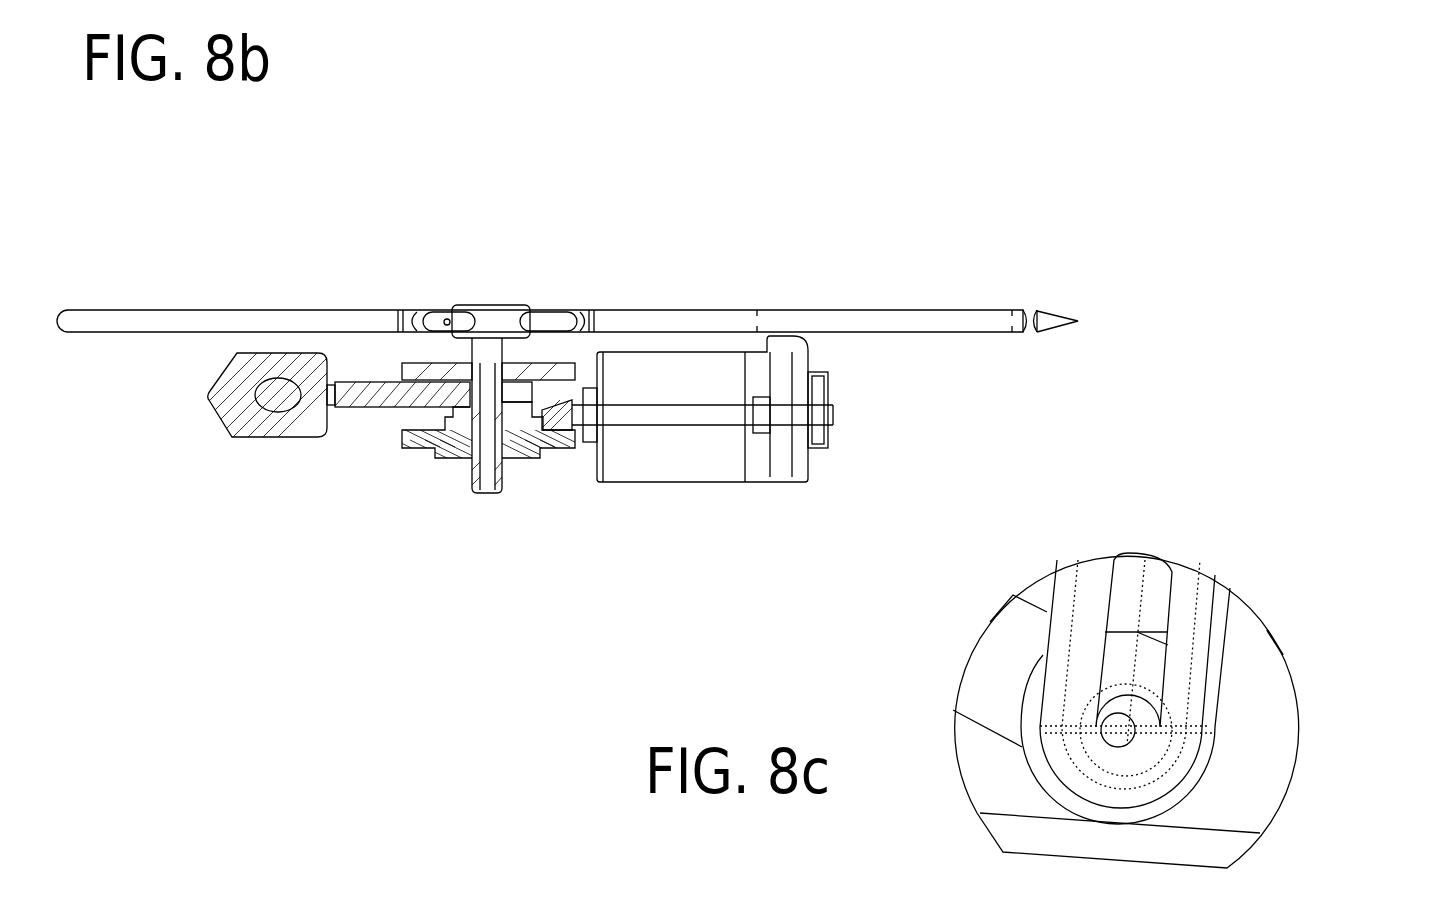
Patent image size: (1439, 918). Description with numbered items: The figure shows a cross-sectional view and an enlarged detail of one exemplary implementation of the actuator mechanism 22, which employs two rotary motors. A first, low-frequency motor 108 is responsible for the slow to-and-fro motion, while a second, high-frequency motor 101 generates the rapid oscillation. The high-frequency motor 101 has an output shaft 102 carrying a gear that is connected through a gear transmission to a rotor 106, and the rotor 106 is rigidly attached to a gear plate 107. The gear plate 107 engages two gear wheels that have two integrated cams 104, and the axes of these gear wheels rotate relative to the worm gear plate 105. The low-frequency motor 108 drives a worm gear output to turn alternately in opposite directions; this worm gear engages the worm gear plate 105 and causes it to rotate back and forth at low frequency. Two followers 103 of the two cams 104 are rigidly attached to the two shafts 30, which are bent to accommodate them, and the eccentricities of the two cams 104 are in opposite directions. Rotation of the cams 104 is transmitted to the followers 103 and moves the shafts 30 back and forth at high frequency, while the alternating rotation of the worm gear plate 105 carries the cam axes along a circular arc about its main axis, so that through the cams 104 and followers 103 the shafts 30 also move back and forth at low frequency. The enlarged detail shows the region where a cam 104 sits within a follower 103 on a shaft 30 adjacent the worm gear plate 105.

In FIG. 8b, the actuator mechanism 22 is at (742, 218).
In FIG. 8b, the shafts 30 is at (175, 305).
In FIG. 8c, the shafts 30 is at (1222, 680).
In FIG. 8b, the high-frequency motor 101 is at (733, 483).
In FIG. 8b, the output shaft 102 is at (562, 400).
In FIG. 8b, the followers 103 is at (498, 305).
In FIG. 8c, the followers 103 is at (1178, 640).
In FIG. 8c, the cams 104 is at (1138, 738).
In FIG. 8b, the worm gear plate 105 is at (378, 420).
In FIG. 8c, the worm gear plate 105 is at (993, 725).
In FIG. 8b, the rotor 106 is at (533, 565).
In FIG. 8b, the gear plate 107 is at (428, 362).
In FIG. 8b, the low-frequency motor 108 is at (217, 425).